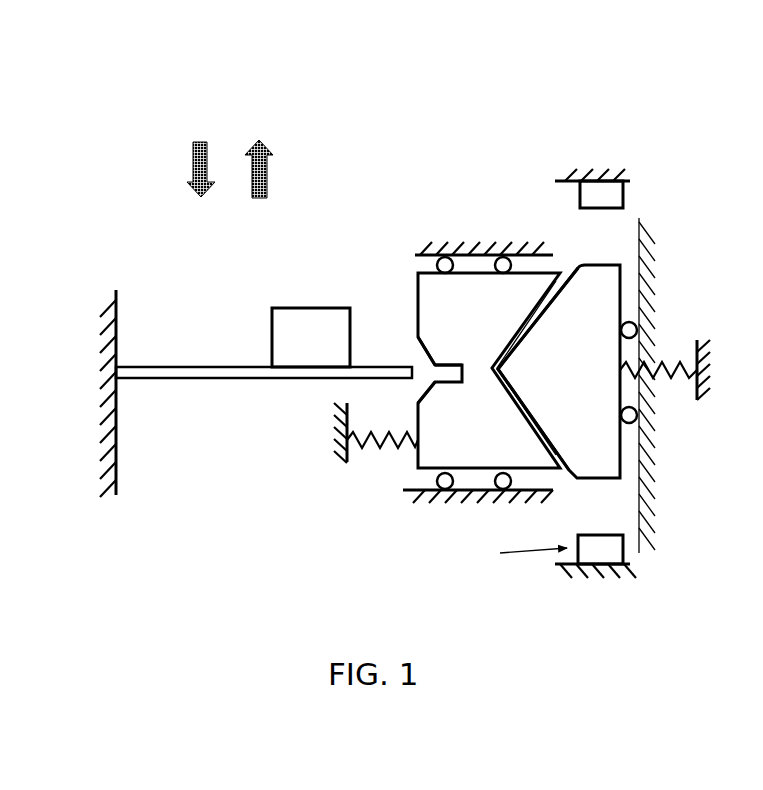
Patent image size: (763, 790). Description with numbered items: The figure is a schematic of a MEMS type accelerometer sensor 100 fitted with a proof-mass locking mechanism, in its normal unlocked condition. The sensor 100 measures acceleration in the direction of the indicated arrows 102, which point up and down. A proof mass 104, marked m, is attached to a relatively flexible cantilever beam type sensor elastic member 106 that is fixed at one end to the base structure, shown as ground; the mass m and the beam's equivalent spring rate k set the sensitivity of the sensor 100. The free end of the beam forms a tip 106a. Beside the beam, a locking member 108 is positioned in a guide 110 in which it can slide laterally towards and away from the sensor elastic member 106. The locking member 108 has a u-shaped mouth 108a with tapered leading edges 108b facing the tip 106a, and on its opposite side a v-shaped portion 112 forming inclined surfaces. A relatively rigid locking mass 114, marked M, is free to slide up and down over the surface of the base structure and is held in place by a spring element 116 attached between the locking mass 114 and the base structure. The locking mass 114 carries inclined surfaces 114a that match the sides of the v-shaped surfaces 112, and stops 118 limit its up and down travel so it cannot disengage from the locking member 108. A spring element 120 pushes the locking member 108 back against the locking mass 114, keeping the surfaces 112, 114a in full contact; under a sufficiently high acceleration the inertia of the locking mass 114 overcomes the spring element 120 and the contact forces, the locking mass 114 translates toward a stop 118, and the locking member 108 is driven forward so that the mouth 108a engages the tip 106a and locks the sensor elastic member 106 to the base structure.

The accelerometer sensor 100 is at (385, 128).
The indicated arrows 102 is at (225, 120).
The proof mass 104 is at (332, 316).
The sensor elastic member 106 is at (188, 362).
The tip of the sensor elastic member 106a is at (412, 377).
The locking member 108 is at (465, 420).
The u-shaped mouth 108a is at (441, 364).
The tapered leading edges 108b is at (425, 345).
The guide 110 is at (426, 492).
The v-shaped portion 112 is at (523, 403).
The locking mass 114 is at (598, 300).
The inclined surfaces 114a is at (510, 380).
The spring element 116 is at (668, 362).
The stops 118 is at (578, 188).
The spring element 120 is at (426, 389).